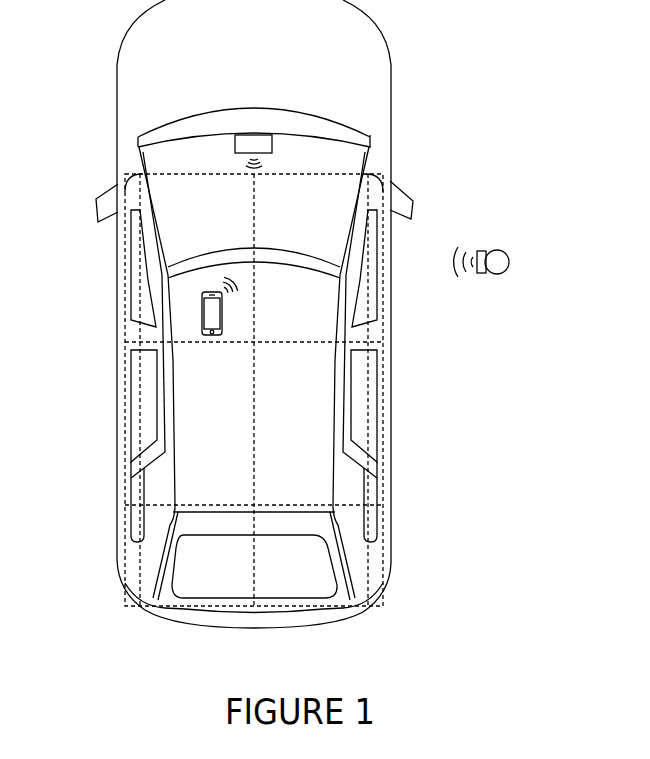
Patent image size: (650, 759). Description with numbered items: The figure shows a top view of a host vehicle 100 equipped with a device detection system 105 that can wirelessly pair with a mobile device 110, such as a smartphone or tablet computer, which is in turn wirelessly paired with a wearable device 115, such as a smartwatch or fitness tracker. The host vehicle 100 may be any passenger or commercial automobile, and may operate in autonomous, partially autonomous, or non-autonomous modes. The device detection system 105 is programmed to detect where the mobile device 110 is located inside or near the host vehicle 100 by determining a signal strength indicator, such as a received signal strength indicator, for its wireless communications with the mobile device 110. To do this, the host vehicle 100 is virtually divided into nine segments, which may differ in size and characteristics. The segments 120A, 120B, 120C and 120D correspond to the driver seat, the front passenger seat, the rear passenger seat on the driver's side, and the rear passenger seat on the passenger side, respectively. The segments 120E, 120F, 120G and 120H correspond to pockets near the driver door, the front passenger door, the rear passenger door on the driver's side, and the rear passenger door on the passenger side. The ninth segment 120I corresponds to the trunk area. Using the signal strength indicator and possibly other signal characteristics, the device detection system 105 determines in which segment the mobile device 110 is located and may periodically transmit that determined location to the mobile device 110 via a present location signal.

The host vehicle 100 is at (392, 103).
The device detection system 105 is at (254, 134).
The mobile device 110 is at (222, 318).
The wearable device 115 is at (510, 262).
The segment 120A is at (168, 190).
The segment 120B is at (328, 203).
The segment 120C is at (147, 368).
The segment 120D is at (322, 413).
The segment 120E is at (122, 265).
The segment 120F is at (383, 250).
The segment 120G is at (382, 443).
The segment 120H is at (122, 452).
The segment 120I is at (198, 568).